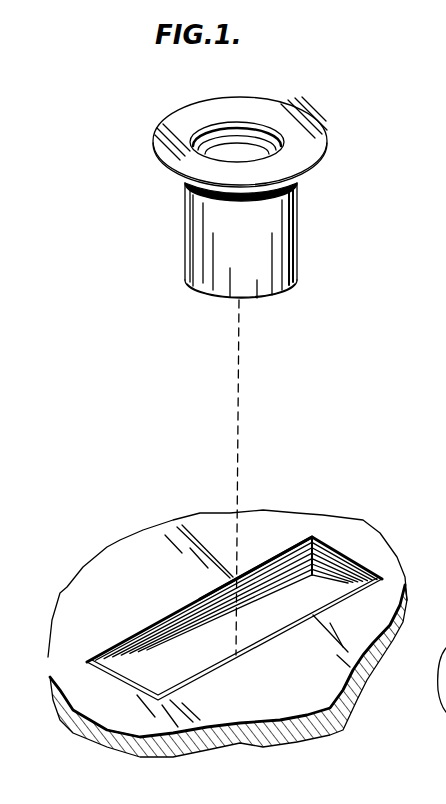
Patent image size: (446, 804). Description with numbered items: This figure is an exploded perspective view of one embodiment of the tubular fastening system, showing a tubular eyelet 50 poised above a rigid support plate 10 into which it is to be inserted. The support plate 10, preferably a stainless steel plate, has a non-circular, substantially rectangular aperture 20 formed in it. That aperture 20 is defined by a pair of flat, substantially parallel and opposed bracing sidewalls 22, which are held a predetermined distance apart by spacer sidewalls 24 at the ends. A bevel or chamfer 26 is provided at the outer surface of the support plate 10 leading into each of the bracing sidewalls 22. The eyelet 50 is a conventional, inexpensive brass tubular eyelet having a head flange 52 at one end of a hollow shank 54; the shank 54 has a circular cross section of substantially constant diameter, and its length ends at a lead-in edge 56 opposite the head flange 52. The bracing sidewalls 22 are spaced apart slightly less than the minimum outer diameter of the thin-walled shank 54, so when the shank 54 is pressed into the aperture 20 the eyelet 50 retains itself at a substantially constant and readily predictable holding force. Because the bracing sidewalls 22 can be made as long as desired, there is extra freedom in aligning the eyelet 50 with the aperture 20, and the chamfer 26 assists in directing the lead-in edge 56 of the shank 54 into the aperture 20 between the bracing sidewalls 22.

The rigid support plate 10 is at (131, 588).
The rectangular aperture 20 is at (138, 632).
The bracing sidewalls 22 is at (280, 573).
The spacer sidewalls 24 is at (345, 582).
The chamfer 26 is at (190, 606).
The tubular eyelet 50 is at (239, 223).
The head flange 52 is at (322, 135).
The hollow shank 54 is at (204, 258).
The lead-in edge 56 is at (267, 298).